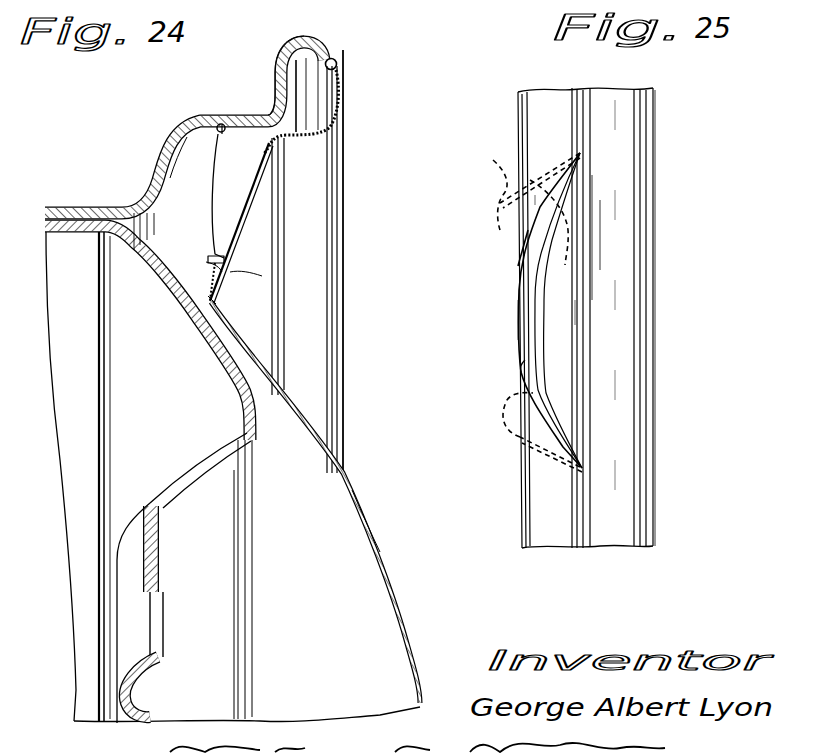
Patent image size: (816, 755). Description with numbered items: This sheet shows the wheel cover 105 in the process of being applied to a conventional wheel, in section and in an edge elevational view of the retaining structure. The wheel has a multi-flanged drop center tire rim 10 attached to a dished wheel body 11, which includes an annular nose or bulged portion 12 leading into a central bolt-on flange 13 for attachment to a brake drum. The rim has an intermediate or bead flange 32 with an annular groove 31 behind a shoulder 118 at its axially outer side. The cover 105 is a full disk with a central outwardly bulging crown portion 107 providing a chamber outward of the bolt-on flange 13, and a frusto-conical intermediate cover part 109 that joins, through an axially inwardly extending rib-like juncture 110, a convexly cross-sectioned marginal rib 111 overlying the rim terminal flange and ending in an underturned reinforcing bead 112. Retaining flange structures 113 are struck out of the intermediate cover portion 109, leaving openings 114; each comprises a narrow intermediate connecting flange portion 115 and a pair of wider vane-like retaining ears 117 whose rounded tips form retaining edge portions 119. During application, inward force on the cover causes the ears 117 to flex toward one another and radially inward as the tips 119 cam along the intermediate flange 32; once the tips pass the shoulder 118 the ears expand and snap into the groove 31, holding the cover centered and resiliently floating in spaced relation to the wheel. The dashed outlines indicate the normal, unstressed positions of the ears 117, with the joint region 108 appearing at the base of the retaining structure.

In FIG. 24, the multi-flanged drop center tire rim 10 is at (316, 38).
In FIG. 24, the wheel body member 11 is at (183, 298).
In FIG. 24, the annular nose or bulged portion 12 is at (240, 418).
In FIG. 24, the central bolt-on flange 13 is at (157, 570).
In FIG. 24, the annular groove 31 is at (198, 130).
In FIG. 24, the intermediate or bead flange 32 is at (250, 114).
In FIG. 24, the cover 105 is at (393, 572).
In FIG. 25, the cover 105 is at (667, 328).
In FIG. 24, the central outwardly bulging crown portion 107 is at (375, 537).
In FIG. 24, the cover joint 108 is at (216, 300).
In FIG. 24, the intermediate cover part 109 is at (240, 278).
In FIG. 25, the intermediate cover part 109 is at (535, 103).
In FIG. 24, the rib-like juncture 110 is at (280, 260).
In FIG. 25, the rib-like juncture 110 is at (582, 110).
In FIG. 24, the marginal rib 111 is at (333, 276).
In FIG. 25, the marginal rib 111 is at (617, 153).
In FIG. 24, the underturned reinforcing and rigidifying bead 112 is at (338, 64).
In FIG. 25, the underturned reinforcing and rigidifying bead 112 is at (648, 210).
In FIG. 24, the retaining flange structure 113 is at (212, 211).
In FIG. 25, the retaining flange structure 113 is at (505, 343).
In FIG. 25, the opening 114 is at (570, 310).
In FIG. 24, the intermediate connecting flange portion 115 is at (210, 264).
In FIG. 25, the intermediate connecting flange portion 115 is at (520, 311).
In FIG. 24, the retaining ear lug 117 is at (226, 177).
In FIG. 25, the retaining ear lug 117 is at (533, 200).
In FIG. 24, the shoulder 118 is at (222, 124).
In FIG. 24, the retaining edge portion 119 is at (218, 125).
In FIG. 25, the retaining edge portion 119 is at (528, 230).